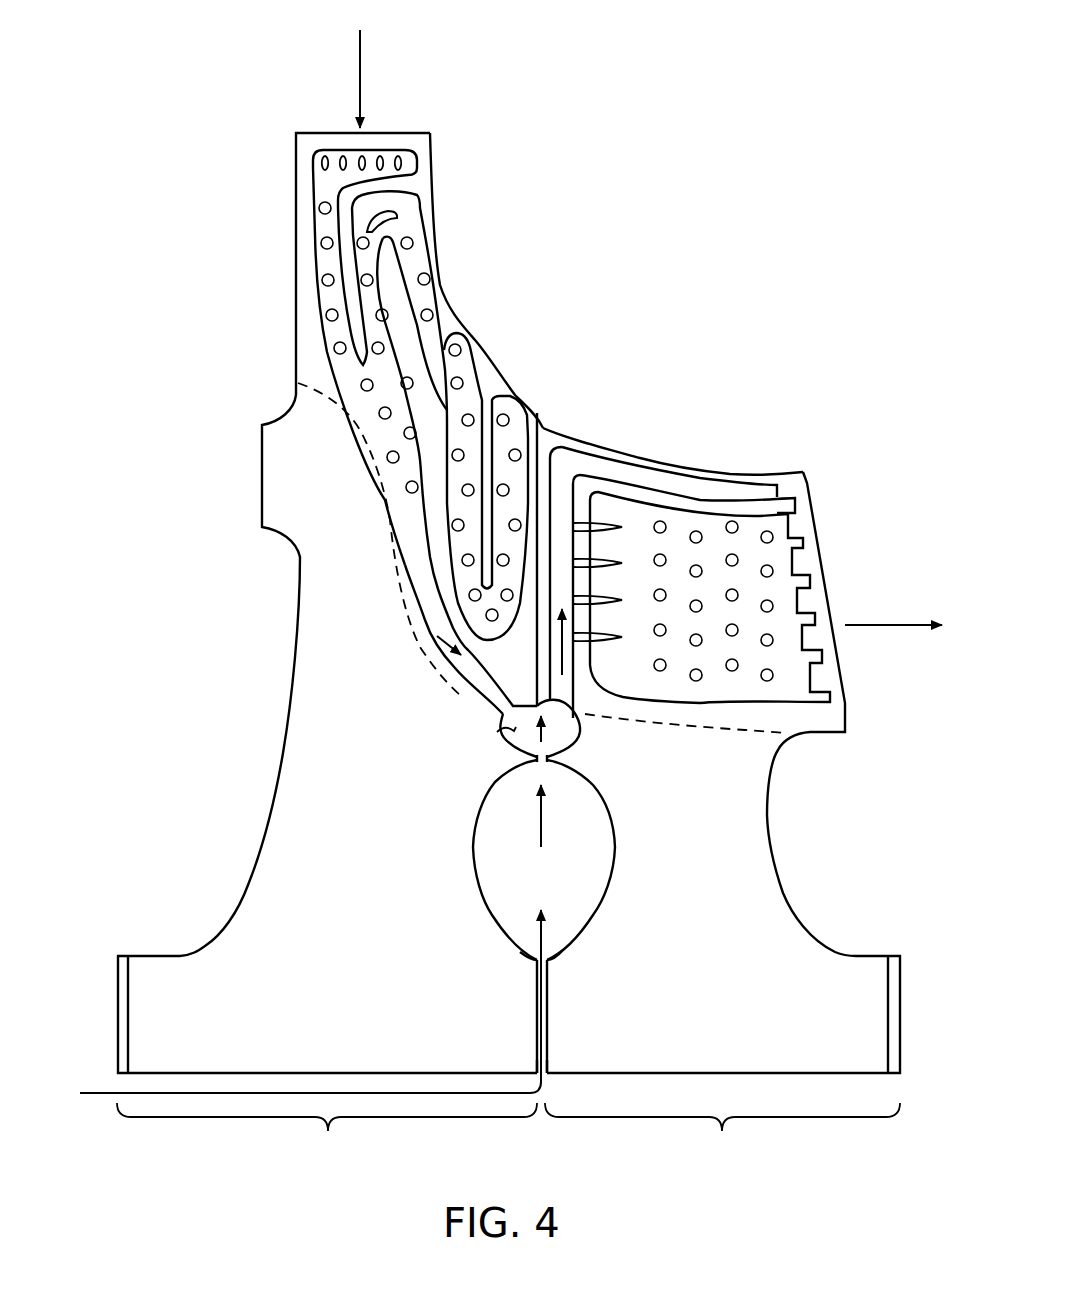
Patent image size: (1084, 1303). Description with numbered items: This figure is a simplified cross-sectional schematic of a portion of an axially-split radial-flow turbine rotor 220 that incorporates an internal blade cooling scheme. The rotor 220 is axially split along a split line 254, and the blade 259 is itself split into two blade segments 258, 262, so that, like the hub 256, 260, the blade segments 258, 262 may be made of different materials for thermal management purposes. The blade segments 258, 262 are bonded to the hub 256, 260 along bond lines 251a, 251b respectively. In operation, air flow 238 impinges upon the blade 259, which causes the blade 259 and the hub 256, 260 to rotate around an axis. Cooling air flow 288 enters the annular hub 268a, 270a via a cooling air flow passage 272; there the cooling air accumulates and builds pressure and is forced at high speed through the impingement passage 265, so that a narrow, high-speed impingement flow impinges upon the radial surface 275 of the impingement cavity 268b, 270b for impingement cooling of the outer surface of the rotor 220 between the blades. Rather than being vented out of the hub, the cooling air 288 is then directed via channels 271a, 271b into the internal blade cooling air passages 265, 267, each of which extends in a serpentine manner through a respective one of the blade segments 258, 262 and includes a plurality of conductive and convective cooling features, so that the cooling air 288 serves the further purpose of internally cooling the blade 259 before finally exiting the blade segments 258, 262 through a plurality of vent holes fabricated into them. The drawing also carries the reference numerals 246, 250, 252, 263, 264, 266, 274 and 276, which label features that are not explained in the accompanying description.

The axially-split radial-flow turbine rotor 220 is at (720, 277).
The air flow 238 is at (360, 80).
The cooling air outlet flow 246 is at (902, 623).
The first blade portion 250 is at (327, 1134).
The bond line 251a is at (402, 628).
The bond line 251b is at (747, 734).
The second blade portion 252 is at (722, 1134).
The split line 254 is at (546, 431).
The hub 256 is at (284, 742).
The blade segment 258 is at (296, 208).
The blade 259 is at (452, 270).
The hub 260 is at (776, 856).
The blade segment 262 is at (812, 565).
The neck passage 263 is at (550, 765).
The first bottom surface 264 is at (332, 1092).
The internal blade cooling air passage 265 is at (443, 328).
The second bottom surface 266 is at (684, 1092).
The internal blade cooling air passage 267 is at (687, 488).
The annular hub 268a is at (493, 853).
The impingement cavity 268b is at (497, 726).
The annular hub 270a is at (592, 853).
The impingement cavity 270b is at (566, 746).
The channel 271a is at (462, 696).
The channel 271b is at (575, 668).
The cooling air flow passage 272 is at (537, 1006).
The slot upper end 274 is at (548, 961).
The radial surface 275 is at (582, 710).
The slot lower end 276 is at (548, 1076).
The cooling air flow 288 is at (140, 1093).